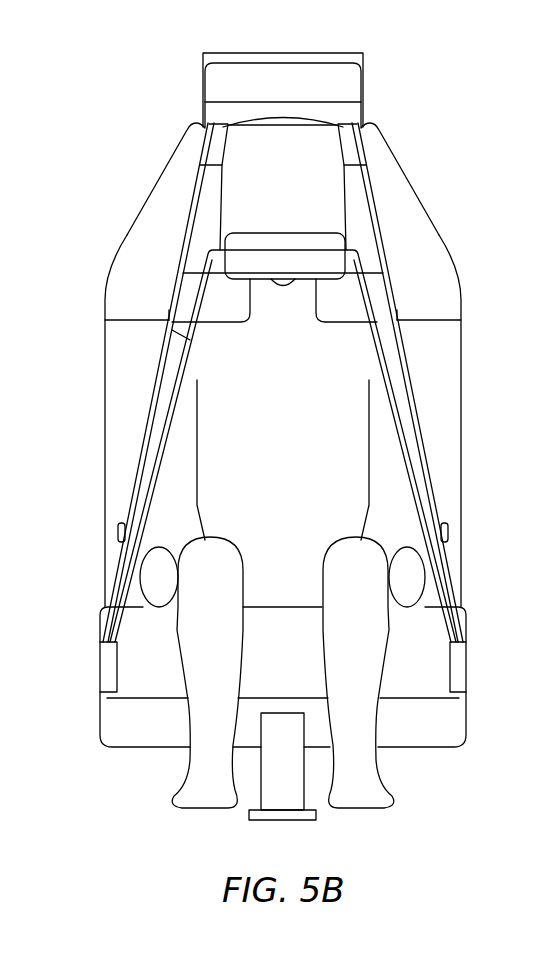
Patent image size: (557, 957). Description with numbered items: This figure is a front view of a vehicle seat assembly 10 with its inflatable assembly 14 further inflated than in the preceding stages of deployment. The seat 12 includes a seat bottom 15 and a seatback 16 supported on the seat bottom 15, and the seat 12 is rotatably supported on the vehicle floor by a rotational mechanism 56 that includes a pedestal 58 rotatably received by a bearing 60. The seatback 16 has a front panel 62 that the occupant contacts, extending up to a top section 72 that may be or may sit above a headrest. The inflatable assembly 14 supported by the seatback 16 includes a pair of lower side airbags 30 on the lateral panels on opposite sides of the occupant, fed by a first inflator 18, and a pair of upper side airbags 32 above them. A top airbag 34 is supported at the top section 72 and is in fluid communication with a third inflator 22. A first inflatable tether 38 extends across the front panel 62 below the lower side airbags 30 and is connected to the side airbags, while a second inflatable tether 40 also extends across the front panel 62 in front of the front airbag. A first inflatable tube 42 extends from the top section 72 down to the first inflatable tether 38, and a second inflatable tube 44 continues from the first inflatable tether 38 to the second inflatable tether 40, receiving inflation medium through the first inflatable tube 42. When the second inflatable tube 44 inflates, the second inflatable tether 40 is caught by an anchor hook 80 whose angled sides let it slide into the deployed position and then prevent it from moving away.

The vehicle seat assembly 10 is at (478, 107).
The seat 12 is at (434, 752).
The inflatable assembly 14 is at (80, 562).
The seat bottom 15 is at (407, 748).
The seatback 16 is at (219, 308).
The first inflator 18 is at (7, 150).
The third inflator 22 is at (6, 105).
The lower side airbags 30 is at (462, 458).
The upper side airbags 32 is at (123, 227).
The top airbag 34 is at (360, 87).
The first inflatable tether 38 is at (170, 307).
The second inflatable tether 40 is at (375, 325).
The first inflatable tube 42 is at (357, 150).
The second inflatable tube 44 is at (223, 203).
The rotational mechanism 56 is at (259, 773).
The pedestal 58 is at (260, 789).
The bearing 60 is at (248, 815).
The front panel 62 is at (378, 303).
The top section 72 is at (345, 203).
The anchor hook 80 is at (118, 530).